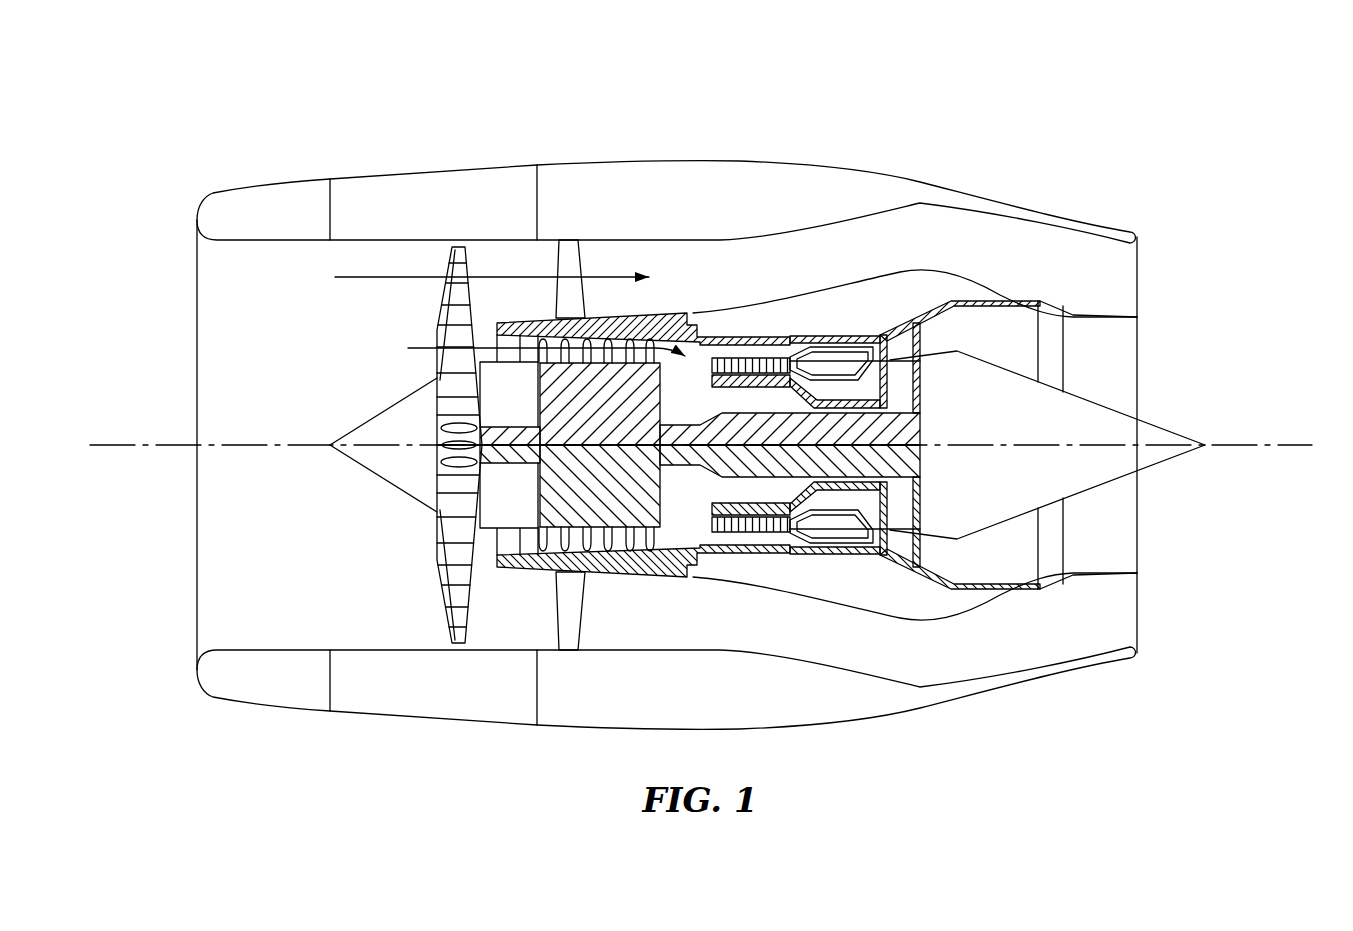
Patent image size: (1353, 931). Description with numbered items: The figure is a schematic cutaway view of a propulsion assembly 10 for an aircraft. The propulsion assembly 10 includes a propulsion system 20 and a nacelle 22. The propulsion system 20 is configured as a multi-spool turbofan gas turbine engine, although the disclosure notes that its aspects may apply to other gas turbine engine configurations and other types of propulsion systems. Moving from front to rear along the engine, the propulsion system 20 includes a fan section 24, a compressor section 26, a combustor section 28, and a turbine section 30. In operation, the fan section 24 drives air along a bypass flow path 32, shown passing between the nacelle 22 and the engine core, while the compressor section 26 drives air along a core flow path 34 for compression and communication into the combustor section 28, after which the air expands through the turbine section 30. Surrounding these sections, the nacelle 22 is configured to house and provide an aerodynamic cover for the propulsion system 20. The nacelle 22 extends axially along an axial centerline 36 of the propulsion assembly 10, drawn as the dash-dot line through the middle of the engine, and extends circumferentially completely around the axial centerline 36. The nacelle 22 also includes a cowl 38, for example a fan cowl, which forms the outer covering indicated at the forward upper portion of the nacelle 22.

The propulsion assembly 10 is at (701, 391).
The propulsion system 20 is at (1104, 271).
The nacelle 22 is at (260, 123).
The fan section 24 is at (416, 612).
The compressor section 26 is at (609, 592).
The combustor section 28 is at (826, 560).
The turbine section 30 is at (914, 582).
The bypass flow path 32 is at (622, 276).
The core flow path 34 is at (660, 362).
The axial centerline 36 is at (1302, 448).
The cowl 38 is at (455, 156).